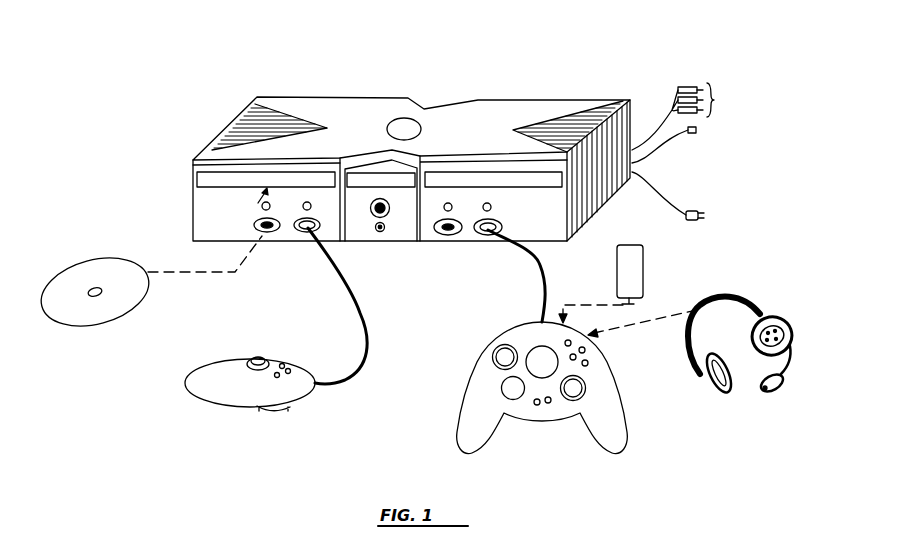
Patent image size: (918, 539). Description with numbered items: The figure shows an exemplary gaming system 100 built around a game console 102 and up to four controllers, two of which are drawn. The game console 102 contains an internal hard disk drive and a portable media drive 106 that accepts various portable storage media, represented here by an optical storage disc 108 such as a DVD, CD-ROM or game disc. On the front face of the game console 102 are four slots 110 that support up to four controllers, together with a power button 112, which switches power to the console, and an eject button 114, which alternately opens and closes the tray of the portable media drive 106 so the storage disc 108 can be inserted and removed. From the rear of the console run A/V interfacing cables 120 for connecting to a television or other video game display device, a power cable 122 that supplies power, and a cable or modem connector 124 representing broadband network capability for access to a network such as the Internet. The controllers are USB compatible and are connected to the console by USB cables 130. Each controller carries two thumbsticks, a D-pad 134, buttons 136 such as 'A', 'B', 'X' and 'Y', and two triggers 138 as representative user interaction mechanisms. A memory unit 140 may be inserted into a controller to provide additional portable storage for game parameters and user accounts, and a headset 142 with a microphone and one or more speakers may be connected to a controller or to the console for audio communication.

The gaming system 100 is at (538, 27).
The game console 102 is at (290, 97).
The portable media drive 106 is at (208, 176).
The optical storage disc 108 is at (105, 326).
The slots 110 is at (302, 233).
The power button 112 is at (381, 233).
The eject button 114 is at (380, 198).
The A/V interfacing cables 120 is at (682, 86).
The power cable 122 is at (686, 220).
The cable or modem connector 124 is at (665, 150).
The USB cables 130 is at (358, 312).
The D-pad 134 is at (501, 388).
The buttons 136 is at (584, 349).
The triggers 138 is at (290, 410).
The memory unit 140 is at (645, 273).
The headset 142 is at (742, 300).